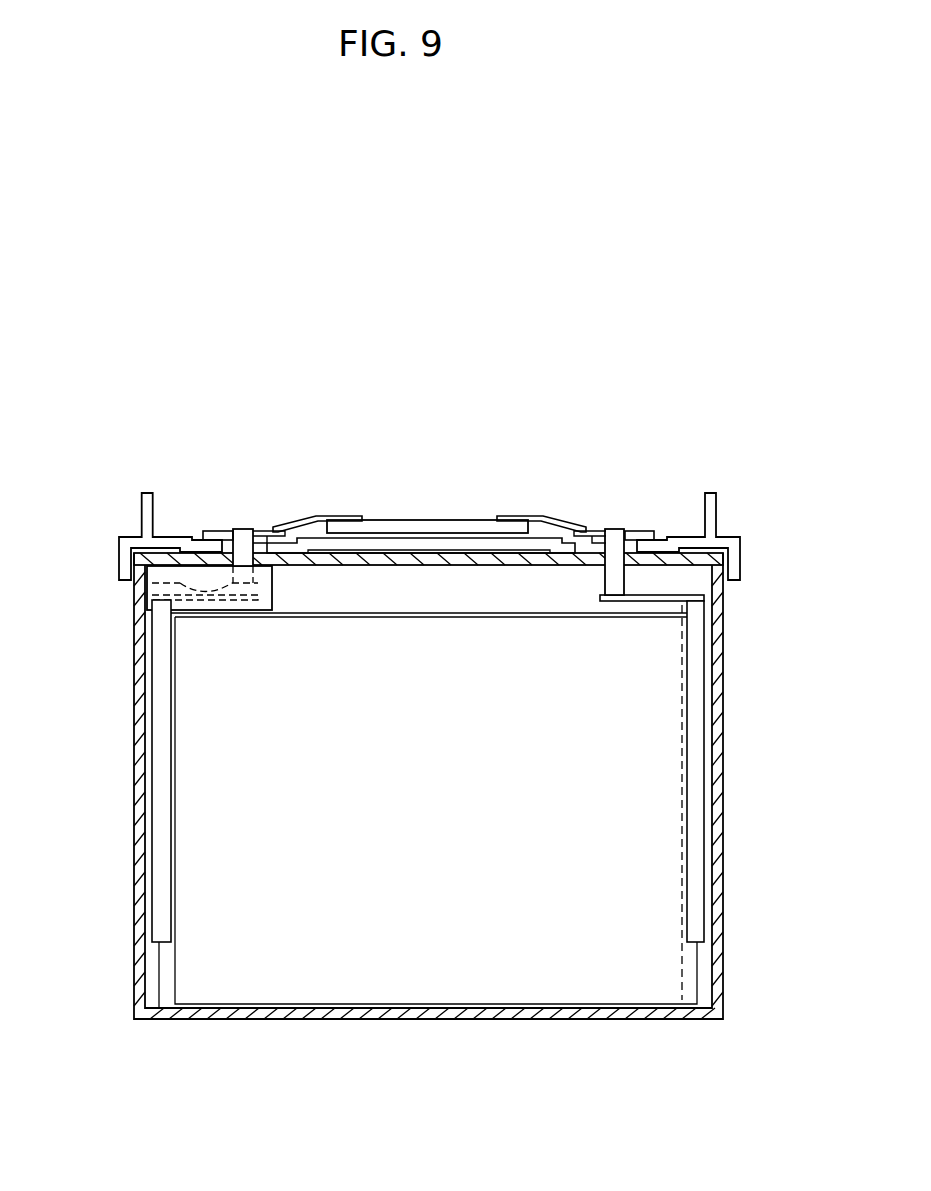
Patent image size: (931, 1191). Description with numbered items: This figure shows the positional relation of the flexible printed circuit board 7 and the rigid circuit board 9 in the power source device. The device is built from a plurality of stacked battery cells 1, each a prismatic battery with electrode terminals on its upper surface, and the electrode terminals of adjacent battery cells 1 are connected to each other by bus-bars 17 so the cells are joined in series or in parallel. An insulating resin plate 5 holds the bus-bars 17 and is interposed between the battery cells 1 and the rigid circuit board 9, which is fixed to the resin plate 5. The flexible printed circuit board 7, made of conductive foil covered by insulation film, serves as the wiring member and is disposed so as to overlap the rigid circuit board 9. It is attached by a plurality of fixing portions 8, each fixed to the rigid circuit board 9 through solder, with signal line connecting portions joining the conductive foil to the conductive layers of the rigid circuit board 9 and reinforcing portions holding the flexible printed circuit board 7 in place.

The battery cell 1 is at (748, 920).
The resin plate 5 is at (146, 526).
The bus-bar 17 is at (215, 531).
The fixing portion 8 is at (350, 499).
The rigid circuit board 9 is at (400, 523).
The flexible printed circuit board 7 is at (538, 516).